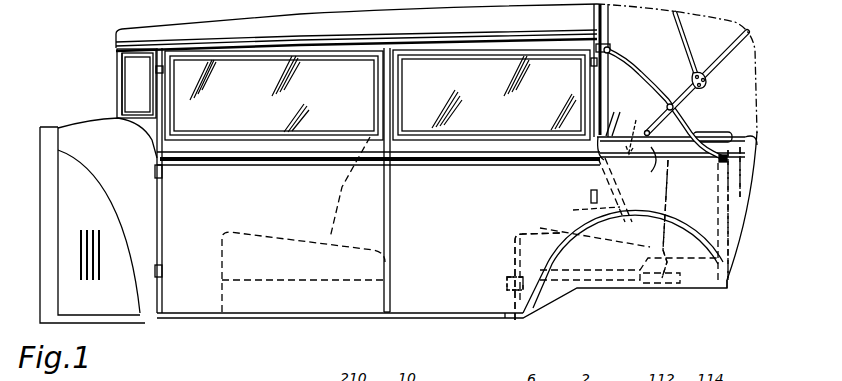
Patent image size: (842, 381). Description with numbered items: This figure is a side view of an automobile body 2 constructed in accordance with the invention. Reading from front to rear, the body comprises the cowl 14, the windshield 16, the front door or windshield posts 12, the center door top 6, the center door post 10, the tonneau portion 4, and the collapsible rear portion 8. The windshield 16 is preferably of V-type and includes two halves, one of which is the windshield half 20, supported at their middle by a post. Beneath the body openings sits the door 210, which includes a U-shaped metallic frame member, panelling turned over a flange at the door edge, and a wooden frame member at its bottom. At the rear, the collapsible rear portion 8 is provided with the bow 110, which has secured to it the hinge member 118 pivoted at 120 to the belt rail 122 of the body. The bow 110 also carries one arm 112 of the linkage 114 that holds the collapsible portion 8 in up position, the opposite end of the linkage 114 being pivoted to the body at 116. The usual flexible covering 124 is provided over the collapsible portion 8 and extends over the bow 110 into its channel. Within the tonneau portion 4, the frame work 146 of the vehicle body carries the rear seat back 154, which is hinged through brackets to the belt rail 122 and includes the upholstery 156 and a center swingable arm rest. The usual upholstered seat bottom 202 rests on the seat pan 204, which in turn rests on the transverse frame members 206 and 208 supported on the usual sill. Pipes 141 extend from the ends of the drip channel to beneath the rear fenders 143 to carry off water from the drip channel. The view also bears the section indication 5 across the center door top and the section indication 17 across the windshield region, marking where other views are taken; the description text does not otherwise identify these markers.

The automobile body 2 is at (31, 171).
The cowl 14 is at (63, 130).
The windshield 16 is at (128, 65).
The section line 17 is at (106, 79).
The windshield half 20 is at (150, 107).
The front door or windshield post 12 is at (158, 55).
The center door post 10 is at (386, 50).
The center door top 6 is at (266, 118).
The section line 5 is at (368, 88).
The collapsible rear portion 8 is at (368, 193).
The tonneau portion 4 is at (365, 205).
The bow 110 is at (610, 18).
The arm of the linkage 112 is at (655, 77).
The linkage 114 is at (677, 115).
The pivot 116 is at (720, 160).
The hinge member 118 is at (613, 117).
The pivot 120 is at (640, 133).
The belt rail 122 is at (640, 163).
The flexible covering 124 is at (752, 72).
The frame work 146 is at (750, 173).
The rear seat back 154 is at (746, 196).
The pipes 141 is at (585, 212).
The rear fender 143 is at (568, 238).
The upholstery 156 is at (675, 203).
The upholstered seat bottom 202 is at (535, 232).
The seat pan 204 is at (505, 277).
The transverse frame member 206 is at (661, 280).
The transverse frame member 208 is at (507, 313).
The door 210 is at (408, 302).